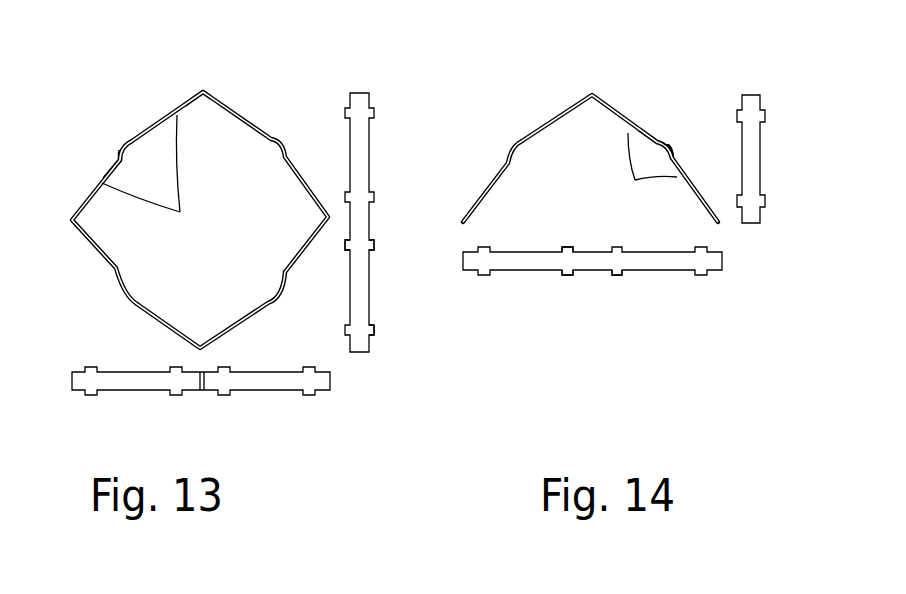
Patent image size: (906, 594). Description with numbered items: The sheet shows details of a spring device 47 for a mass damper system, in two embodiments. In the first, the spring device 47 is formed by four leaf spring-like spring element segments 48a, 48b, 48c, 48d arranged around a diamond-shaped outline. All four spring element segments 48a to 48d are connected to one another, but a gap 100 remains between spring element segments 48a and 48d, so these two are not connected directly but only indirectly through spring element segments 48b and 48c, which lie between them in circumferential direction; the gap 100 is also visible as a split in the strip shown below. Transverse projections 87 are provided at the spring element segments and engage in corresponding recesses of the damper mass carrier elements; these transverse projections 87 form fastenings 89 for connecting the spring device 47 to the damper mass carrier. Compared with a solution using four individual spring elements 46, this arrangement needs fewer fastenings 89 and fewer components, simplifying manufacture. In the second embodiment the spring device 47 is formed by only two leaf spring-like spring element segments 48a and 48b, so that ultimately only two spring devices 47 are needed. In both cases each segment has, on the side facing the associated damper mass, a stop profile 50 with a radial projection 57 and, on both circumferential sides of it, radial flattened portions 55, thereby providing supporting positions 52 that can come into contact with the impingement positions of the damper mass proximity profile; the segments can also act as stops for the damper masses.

In FIG. 14, the spring element 46 is at (525, 260).
In FIG. 13, the spring device 47 is at (244, 243).
In FIG. 14, the spring device 47 is at (627, 198).
In FIG. 13, the spring element segment 48a is at (158, 130).
In FIG. 14, the spring element segment 48a is at (610, 102).
In FIG. 13, the spring element segment 48b is at (118, 283).
In FIG. 14, the spring element segment 48b is at (487, 193).
In FIG. 13, the spring element segment 48c is at (293, 263).
In FIG. 13, the spring element segment 48d is at (253, 130).
In FIG. 13, the stop profile 50 is at (120, 152).
In FIG. 14, the stop profile 50 is at (670, 147).
In FIG. 13, the supporting position 52 is at (157, 174).
In FIG. 14, the supporting position 52 is at (642, 171).
In FIG. 13, the radial flattened portion 55 is at (187, 100).
In FIG. 13, the radial projection 57 is at (128, 141).
In FIG. 14, the radial projection 57 is at (657, 140).
In FIG. 13, the transverse projection 87 is at (370, 252).
In FIG. 14, the transverse projection 87 is at (573, 258).
In FIG. 13, the fastening 89 is at (372, 329).
In FIG. 14, the fastening 89 is at (615, 274).
In FIG. 13, the gap 100 is at (205, 89).